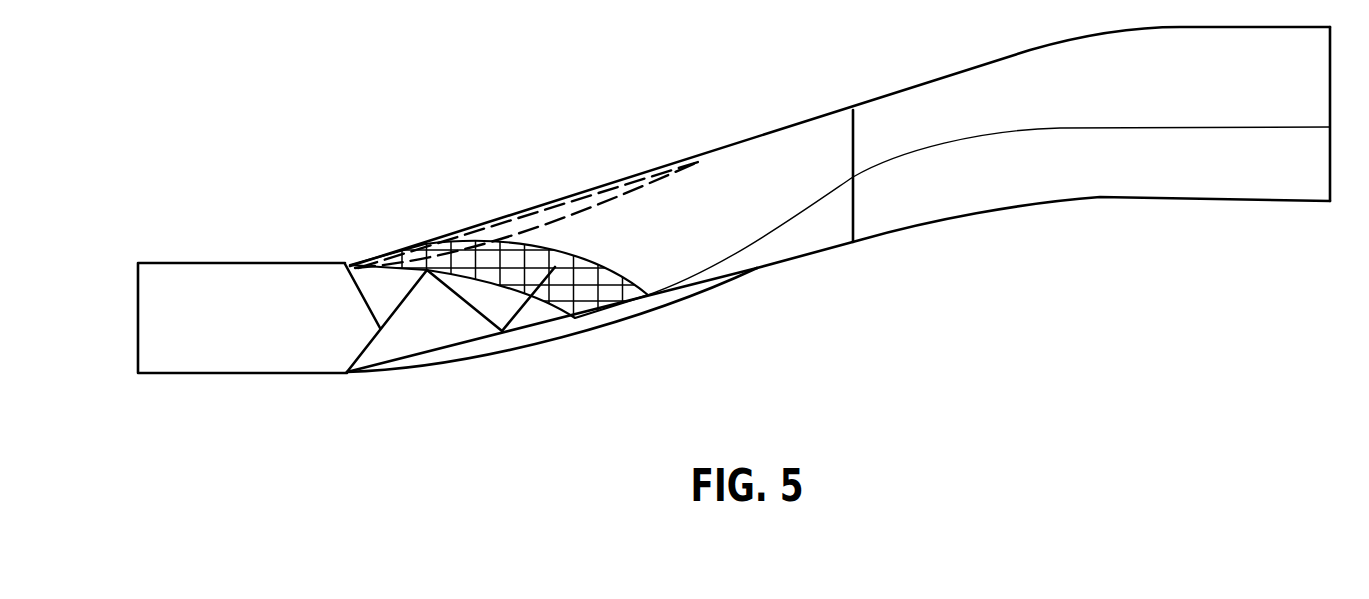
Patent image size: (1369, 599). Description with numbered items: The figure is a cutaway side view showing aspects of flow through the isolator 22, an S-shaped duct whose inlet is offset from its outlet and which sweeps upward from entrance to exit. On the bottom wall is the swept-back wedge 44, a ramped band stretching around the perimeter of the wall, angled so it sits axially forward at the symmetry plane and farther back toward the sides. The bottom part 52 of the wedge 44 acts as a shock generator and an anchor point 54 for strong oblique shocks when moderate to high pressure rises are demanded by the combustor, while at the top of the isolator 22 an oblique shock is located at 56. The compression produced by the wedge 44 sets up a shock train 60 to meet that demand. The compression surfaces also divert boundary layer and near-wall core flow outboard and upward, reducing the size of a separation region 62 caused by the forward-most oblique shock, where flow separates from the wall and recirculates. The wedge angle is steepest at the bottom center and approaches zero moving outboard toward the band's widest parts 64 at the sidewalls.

The isolator 22 is at (236, 210).
The swept-back wedge 44 is at (428, 262).
The bottom part of the wedge 52 is at (447, 366).
The anchor point 54 is at (348, 374).
The oblique shock 56 is at (342, 265).
The shock train 60 is at (255, 375).
The separation region 62 is at (543, 202).
The widest parts of the band 64 is at (605, 290).